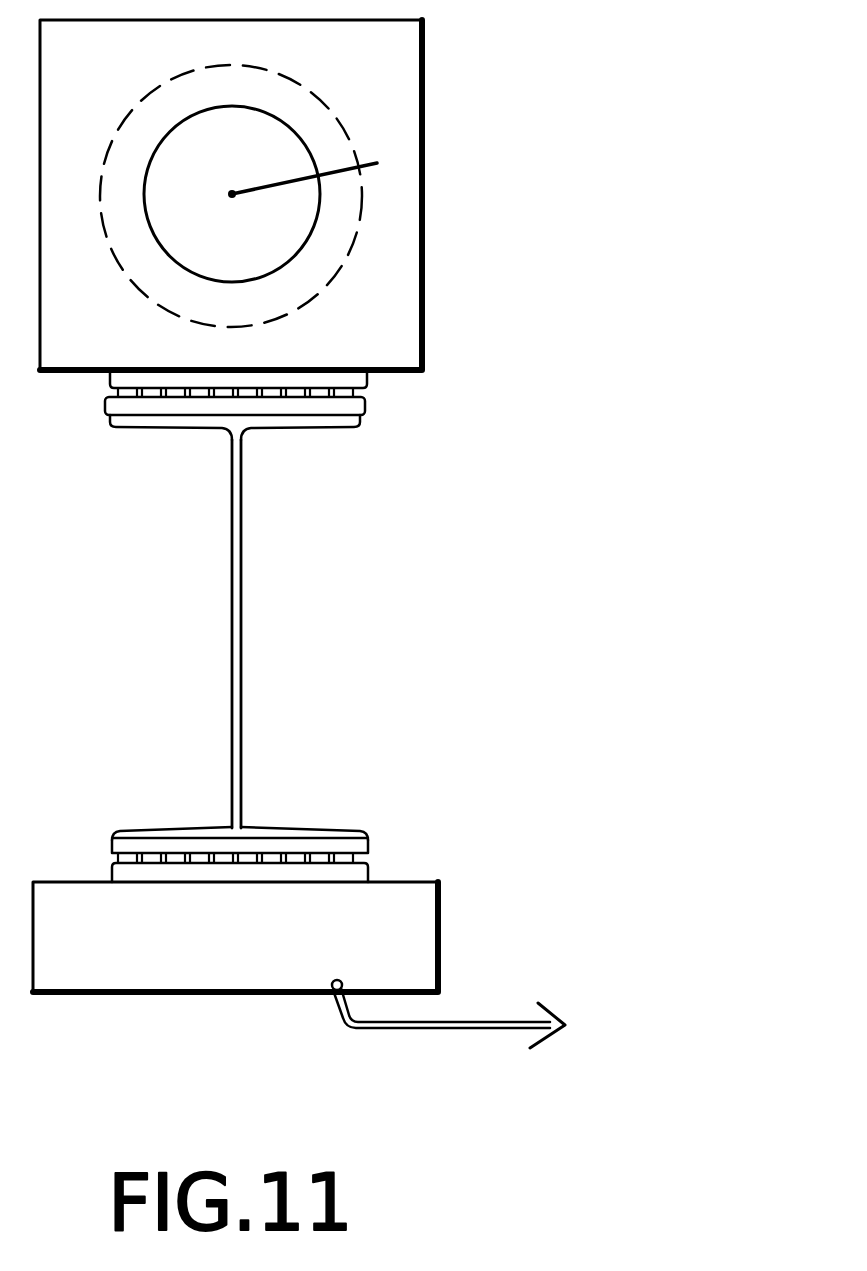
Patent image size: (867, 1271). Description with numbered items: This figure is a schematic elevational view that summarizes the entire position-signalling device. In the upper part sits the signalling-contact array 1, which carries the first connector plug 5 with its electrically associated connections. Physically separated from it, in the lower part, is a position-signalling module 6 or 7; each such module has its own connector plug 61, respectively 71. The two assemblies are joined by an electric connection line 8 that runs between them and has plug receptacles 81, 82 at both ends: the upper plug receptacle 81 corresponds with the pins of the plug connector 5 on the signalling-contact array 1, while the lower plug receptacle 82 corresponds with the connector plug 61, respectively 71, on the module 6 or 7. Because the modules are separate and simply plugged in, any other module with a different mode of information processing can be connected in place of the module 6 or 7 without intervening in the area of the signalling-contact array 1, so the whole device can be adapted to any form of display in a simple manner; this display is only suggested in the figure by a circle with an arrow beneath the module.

The signalling-contact array 1 is at (402, 78).
The first connector plug 5 is at (330, 367).
The plug receptacle 81 is at (335, 424).
The electric connection line 8 is at (243, 613).
The plug receptacle 82 is at (347, 830).
The connector plug 61 is at (363, 837).
The connector plug 71 is at (348, 878).
The position-signalling module 6 is at (331, 965).
The position-signalling module 7 is at (407, 955).